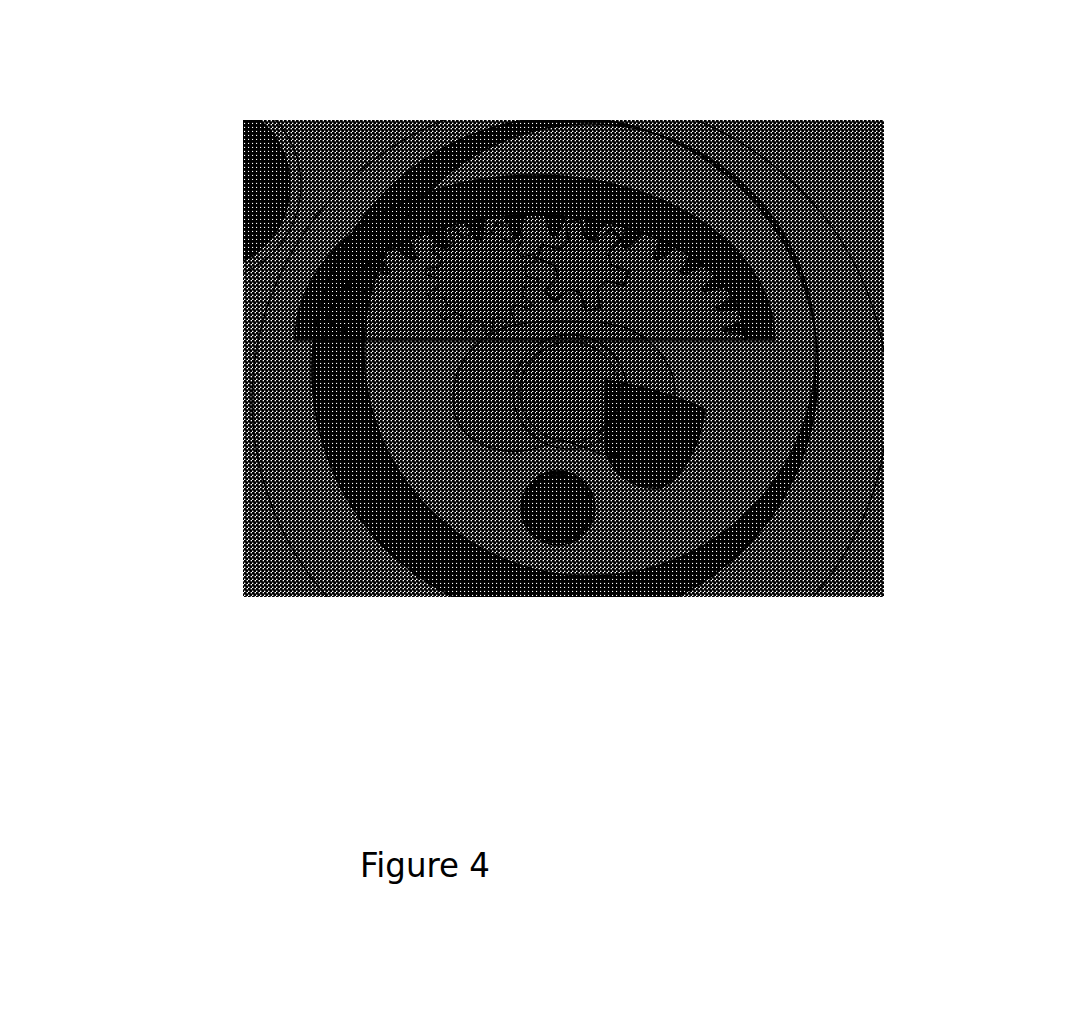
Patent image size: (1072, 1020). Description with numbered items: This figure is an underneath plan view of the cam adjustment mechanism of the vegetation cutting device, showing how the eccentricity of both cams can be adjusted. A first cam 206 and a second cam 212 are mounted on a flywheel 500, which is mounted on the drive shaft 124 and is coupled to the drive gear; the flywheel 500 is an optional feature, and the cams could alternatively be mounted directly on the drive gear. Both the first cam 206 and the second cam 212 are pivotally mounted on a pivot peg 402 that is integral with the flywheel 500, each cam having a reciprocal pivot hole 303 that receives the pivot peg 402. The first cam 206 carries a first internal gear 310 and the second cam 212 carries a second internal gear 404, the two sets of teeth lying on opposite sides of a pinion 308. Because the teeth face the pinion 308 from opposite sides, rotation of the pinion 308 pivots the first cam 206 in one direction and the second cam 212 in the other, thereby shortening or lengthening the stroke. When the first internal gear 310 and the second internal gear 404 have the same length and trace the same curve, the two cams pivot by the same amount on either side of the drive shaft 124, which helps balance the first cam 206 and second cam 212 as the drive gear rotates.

The flywheel 500 is at (347, 130).
The first cam 206 is at (818, 397).
The second internal gear 404 is at (348, 352).
The second cam 212 is at (330, 256).
The first internal gear 310 is at (553, 225).
The pinion 308 is at (633, 232).
The pivot peg 402 is at (585, 547).
The drive shaft 124 is at (598, 432).
The reciprocal pivot hole 303 is at (552, 540).